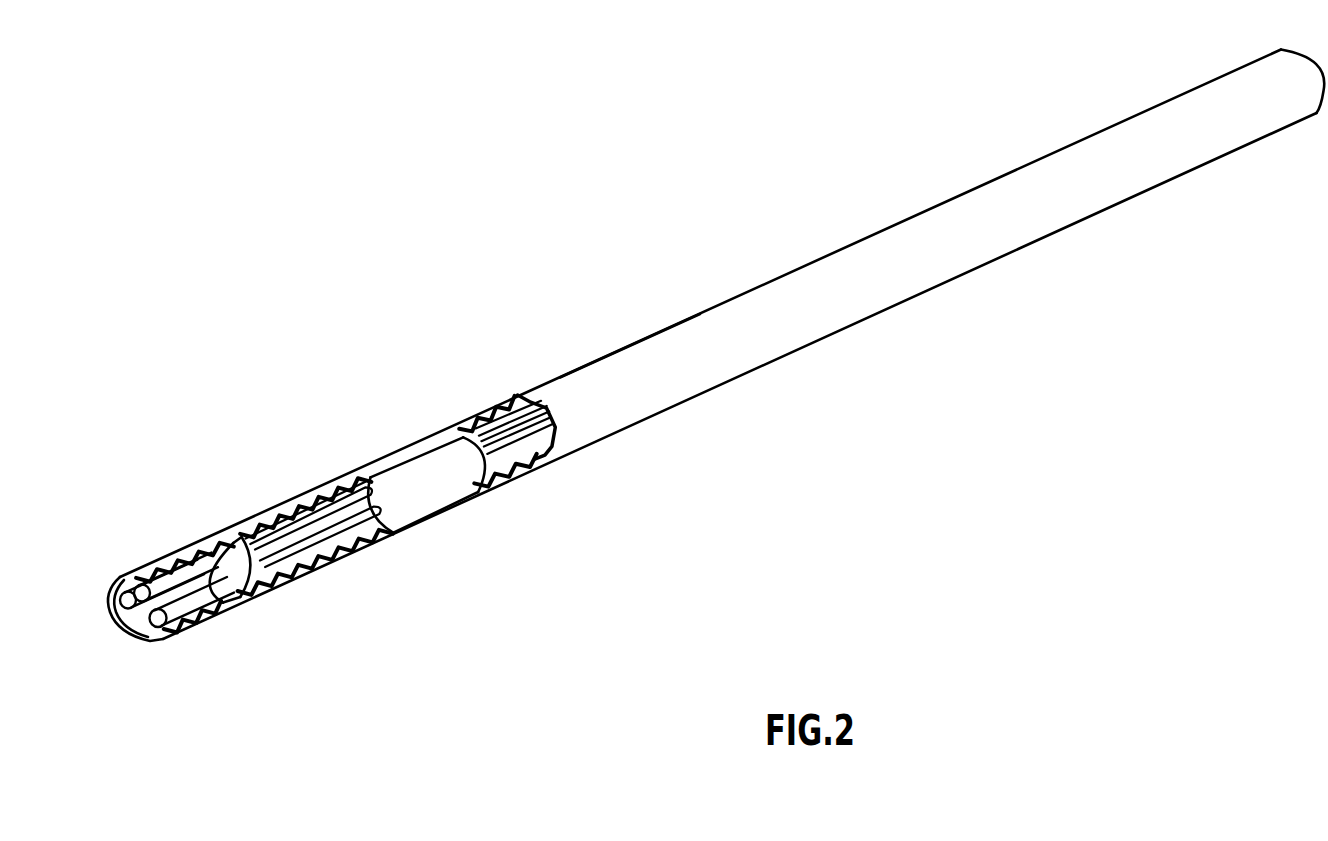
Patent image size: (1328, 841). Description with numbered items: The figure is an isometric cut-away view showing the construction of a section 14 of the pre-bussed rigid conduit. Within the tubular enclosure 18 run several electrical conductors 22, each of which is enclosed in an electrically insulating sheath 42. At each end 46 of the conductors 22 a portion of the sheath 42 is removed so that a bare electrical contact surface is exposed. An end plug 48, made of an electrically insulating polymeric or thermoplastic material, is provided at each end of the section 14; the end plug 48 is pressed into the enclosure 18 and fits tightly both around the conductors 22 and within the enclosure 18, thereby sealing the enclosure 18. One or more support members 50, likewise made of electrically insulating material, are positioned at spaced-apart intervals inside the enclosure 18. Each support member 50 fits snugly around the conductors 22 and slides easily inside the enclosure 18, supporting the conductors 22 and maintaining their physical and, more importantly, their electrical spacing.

The section 14 is at (822, 257).
The enclosure 18 is at (615, 368).
The conductor 22 is at (287, 507).
The electrically insulating sheath 42 is at (401, 528).
The end 46 is at (121, 640).
The end plug 48 is at (218, 559).
The support member 50 is at (418, 472).